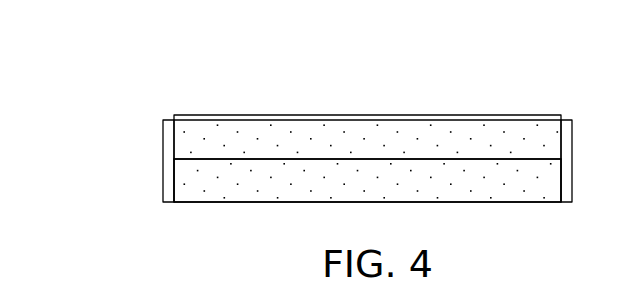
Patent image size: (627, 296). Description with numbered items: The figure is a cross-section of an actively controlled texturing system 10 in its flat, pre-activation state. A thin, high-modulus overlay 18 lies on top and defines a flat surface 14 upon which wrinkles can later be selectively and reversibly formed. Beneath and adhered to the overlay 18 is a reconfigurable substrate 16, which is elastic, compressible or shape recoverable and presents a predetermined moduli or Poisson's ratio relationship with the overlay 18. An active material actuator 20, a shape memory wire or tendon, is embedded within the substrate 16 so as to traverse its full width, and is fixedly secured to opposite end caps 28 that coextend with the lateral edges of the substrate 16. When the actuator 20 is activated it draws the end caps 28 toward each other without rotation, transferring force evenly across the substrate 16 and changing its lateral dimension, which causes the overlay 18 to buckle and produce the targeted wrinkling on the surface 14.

The system 10 is at (336, 132).
The surface 14 is at (367, 151).
The substrate 16 is at (493, 182).
The overlay 18 is at (505, 115).
The active material actuator 20 is at (221, 159).
The end caps 28 is at (162, 150).